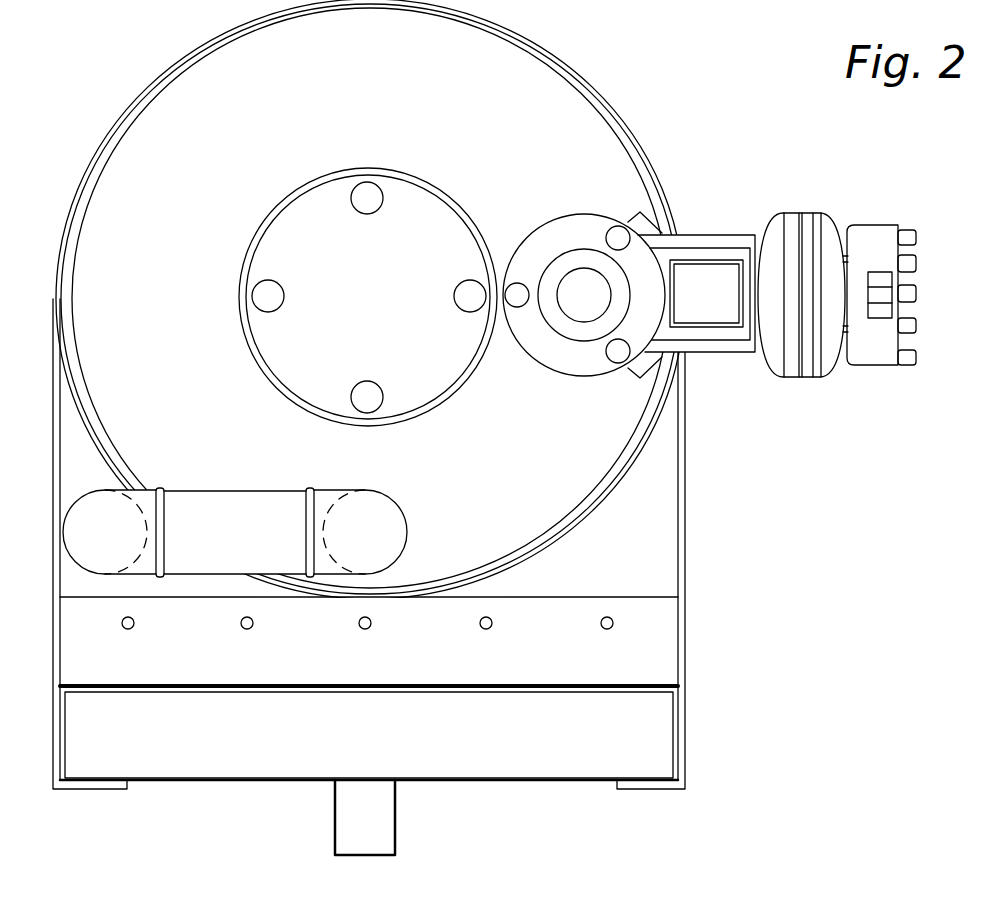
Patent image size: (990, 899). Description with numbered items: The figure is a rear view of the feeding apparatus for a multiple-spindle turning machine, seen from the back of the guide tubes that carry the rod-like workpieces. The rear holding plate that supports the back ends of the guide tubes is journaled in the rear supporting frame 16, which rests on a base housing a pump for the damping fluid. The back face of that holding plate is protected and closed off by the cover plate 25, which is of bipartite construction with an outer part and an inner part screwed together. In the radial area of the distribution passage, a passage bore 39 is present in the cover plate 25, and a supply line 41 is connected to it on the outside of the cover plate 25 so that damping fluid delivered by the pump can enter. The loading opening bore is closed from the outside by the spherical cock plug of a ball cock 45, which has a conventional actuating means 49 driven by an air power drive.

The rear supporting frame 16 is at (692, 637).
The cover plate 25 is at (127, 195).
The passage bore 39 is at (383, 528).
The supply line 41 is at (218, 512).
The ball cock 45 is at (584, 352).
The actuating means 49 is at (802, 206).